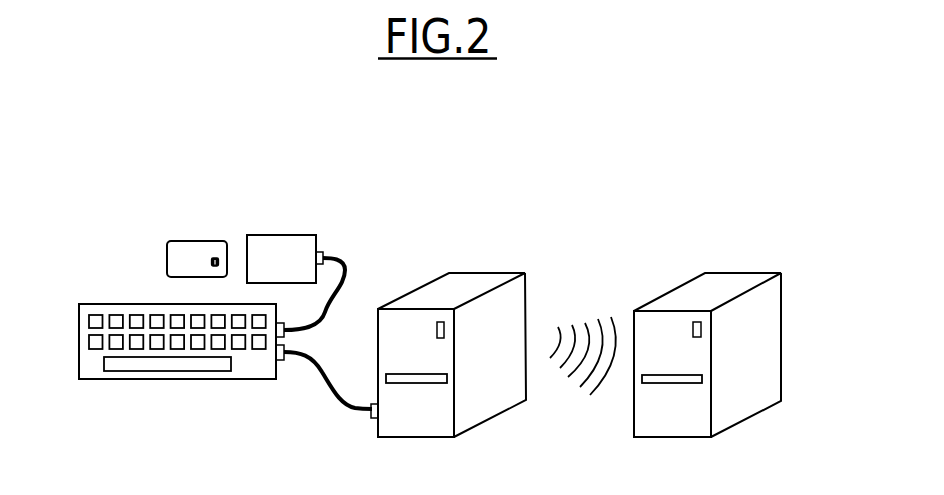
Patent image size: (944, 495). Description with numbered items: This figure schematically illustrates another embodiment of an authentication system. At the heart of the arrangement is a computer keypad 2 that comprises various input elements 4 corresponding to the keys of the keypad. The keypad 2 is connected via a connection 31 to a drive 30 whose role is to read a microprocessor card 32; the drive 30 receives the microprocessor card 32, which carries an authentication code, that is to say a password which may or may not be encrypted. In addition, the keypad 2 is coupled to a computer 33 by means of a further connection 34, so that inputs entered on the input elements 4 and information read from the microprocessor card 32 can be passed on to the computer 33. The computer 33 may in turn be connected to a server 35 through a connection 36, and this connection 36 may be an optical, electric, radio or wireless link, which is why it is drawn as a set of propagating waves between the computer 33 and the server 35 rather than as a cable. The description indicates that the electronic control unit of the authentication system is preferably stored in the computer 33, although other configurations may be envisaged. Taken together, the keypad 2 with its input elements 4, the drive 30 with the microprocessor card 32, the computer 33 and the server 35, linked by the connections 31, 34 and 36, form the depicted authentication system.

The computer keypad 2 is at (178, 380).
The input elements 4 is at (177, 321).
The drive 30 is at (282, 235).
The connection 31 is at (328, 297).
The microprocessor card 32 is at (197, 241).
The computer 33 is at (487, 273).
The connection 34 is at (334, 404).
The server 35 is at (744, 273).
The connection 36 is at (590, 304).